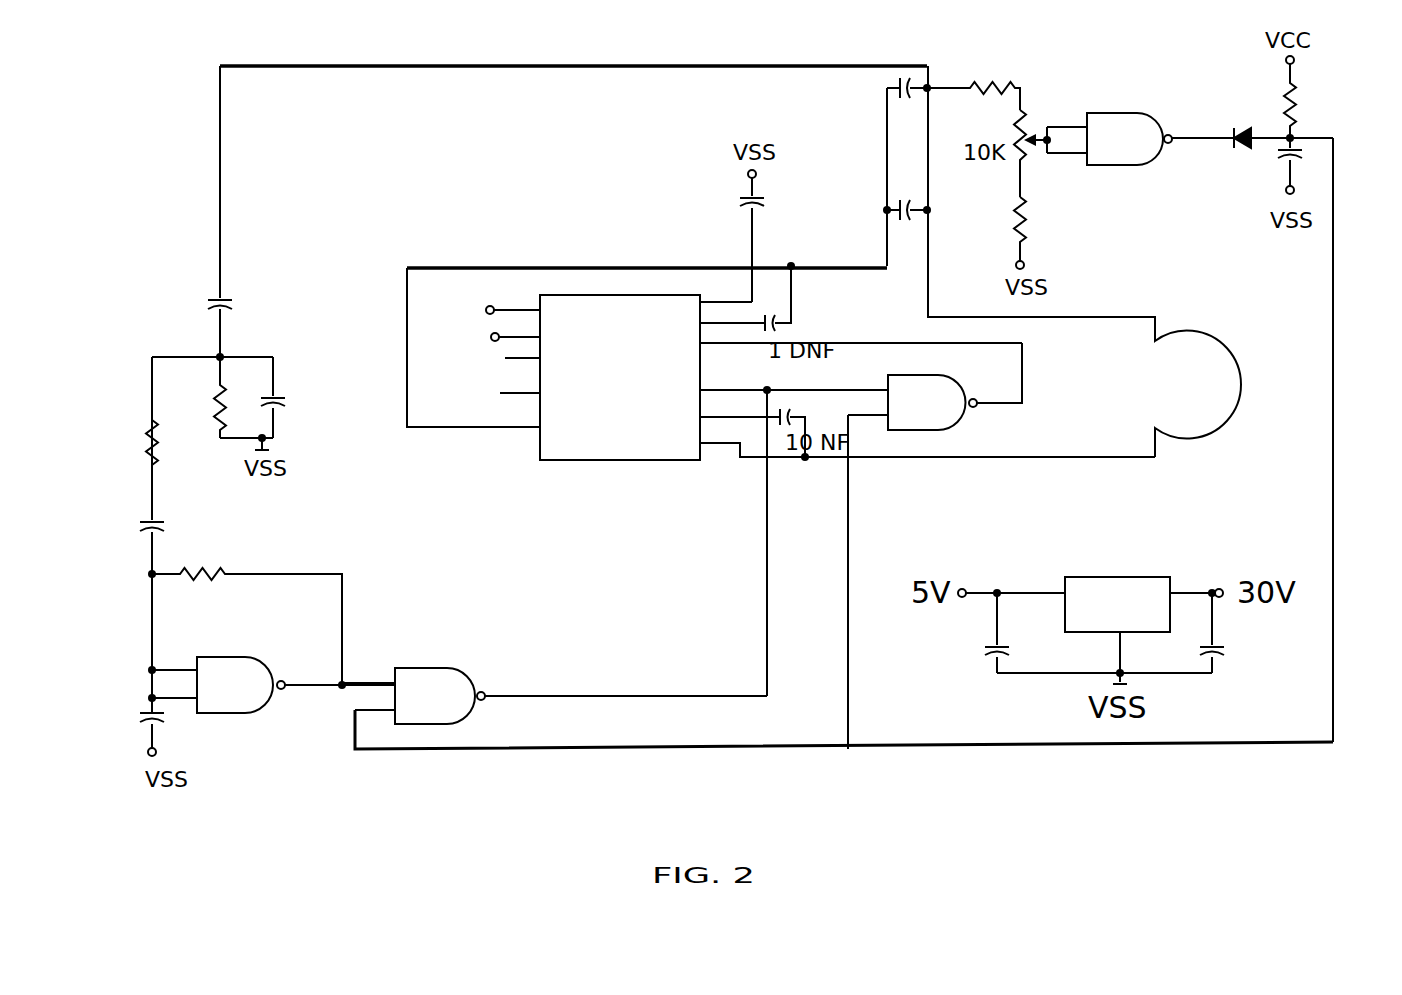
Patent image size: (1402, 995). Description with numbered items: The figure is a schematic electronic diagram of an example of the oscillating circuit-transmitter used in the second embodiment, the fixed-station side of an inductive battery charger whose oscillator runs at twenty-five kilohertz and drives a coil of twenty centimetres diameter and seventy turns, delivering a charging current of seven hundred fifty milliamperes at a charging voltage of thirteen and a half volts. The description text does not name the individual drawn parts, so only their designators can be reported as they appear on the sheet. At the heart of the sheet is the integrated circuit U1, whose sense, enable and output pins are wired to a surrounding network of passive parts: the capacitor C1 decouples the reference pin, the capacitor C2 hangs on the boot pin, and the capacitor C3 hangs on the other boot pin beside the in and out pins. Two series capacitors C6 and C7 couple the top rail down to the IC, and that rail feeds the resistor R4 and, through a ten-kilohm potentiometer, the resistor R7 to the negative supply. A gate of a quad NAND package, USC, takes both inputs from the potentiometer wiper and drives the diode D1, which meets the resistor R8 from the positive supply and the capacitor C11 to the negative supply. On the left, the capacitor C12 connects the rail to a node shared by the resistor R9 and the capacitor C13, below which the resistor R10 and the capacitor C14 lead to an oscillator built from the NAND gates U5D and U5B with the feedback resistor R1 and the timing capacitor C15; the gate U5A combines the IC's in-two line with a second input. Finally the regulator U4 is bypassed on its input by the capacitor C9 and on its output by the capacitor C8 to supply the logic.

The capacitor 330pF C12 is at (267, 316).
The resistor 150 ohm R9 is at (242, 397).
The capacitor 10nF C13 is at (311, 397).
The resistor 1K R10 is at (178, 457).
The capacitor 1000pF C14 is at (201, 527).
The resistor 10M R1 is at (247, 626).
The NAND gate 4011 U5D is at (273, 668).
The capacitor 100pF C15 is at (220, 734).
The NAND gate 4011 U5B is at (554, 689).
The integrated circuit U1 is at (781, 364).
The capacitor 100nF C1 is at (795, 236).
The capacitor 1 DNF C2 is at (774, 299).
The capacitor 10nF C3 is at (794, 414).
The NAND gate 4011 U5A is at (935, 546).
The capacitor C6 is at (889, 90).
The capacitor C7 is at (926, 210).
The resistor 1M R4 is at (973, 87).
The resistor 2.2K R7 is at (1051, 227).
The NAND gate 4011 USC is at (1148, 128).
The diode D1 is at (1278, 118).
The resistor 1M R8 is at (1314, 97).
The capacitor 10nF C11 is at (1305, 166).
The voltage regulator LM7805 U4 is at (1090, 594).
The capacitor 10uF C9 is at (982, 659).
The capacitor 470uF C8 is at (1261, 647).